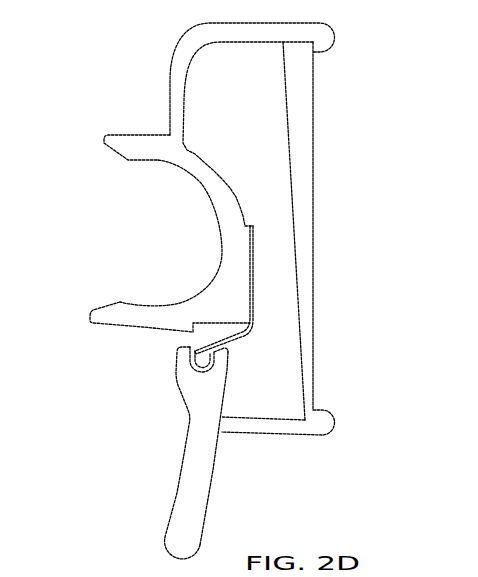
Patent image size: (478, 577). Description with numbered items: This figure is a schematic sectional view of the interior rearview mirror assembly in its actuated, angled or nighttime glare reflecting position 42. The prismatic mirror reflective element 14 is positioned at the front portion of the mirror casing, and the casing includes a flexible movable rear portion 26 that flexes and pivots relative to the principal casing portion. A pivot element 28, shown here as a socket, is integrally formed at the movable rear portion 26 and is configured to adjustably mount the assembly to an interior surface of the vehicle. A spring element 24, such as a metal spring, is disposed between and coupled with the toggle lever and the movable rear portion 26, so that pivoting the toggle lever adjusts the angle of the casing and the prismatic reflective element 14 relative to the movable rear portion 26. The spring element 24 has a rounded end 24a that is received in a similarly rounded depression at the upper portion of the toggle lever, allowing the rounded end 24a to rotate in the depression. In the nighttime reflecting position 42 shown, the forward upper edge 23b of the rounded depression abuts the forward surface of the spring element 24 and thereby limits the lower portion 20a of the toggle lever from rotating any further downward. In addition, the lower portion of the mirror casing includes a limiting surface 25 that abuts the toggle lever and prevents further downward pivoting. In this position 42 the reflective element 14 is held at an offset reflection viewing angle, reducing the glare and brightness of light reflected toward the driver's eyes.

The prismatic mirror reflective element 14 is at (303, 132).
The pivot element 28 is at (134, 136).
The movable rear portion 26 is at (225, 263).
The spring element 24 is at (245, 333).
The rounded end 24a is at (192, 353).
The forward upper edge 23b is at (215, 362).
The lower portion 20a is at (188, 487).
The limiting surface 25 is at (220, 420).
The nighttime reflecting position 42 is at (152, 513).